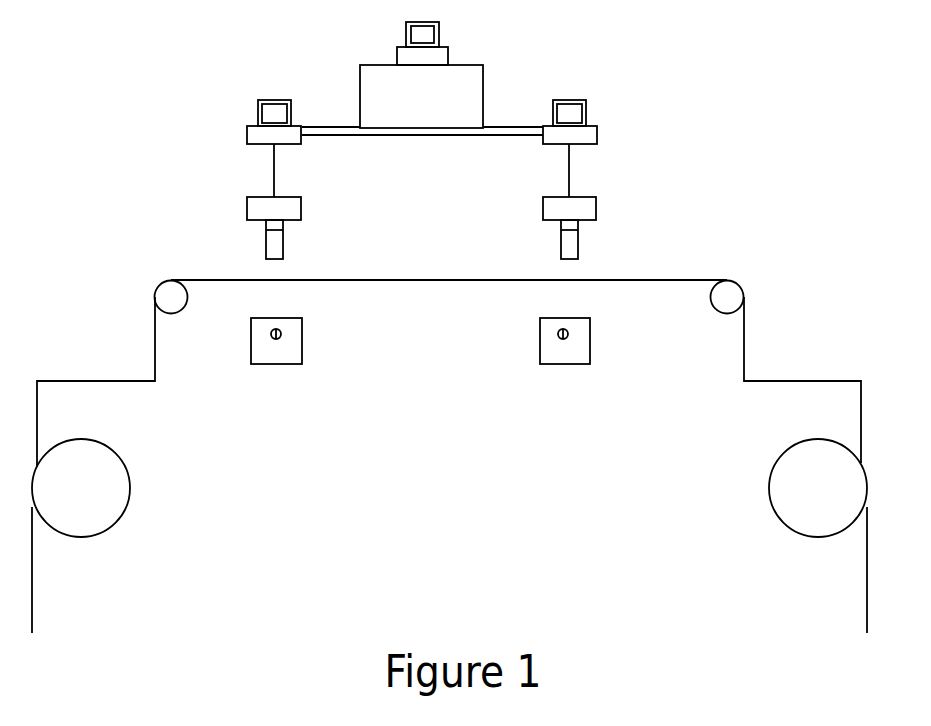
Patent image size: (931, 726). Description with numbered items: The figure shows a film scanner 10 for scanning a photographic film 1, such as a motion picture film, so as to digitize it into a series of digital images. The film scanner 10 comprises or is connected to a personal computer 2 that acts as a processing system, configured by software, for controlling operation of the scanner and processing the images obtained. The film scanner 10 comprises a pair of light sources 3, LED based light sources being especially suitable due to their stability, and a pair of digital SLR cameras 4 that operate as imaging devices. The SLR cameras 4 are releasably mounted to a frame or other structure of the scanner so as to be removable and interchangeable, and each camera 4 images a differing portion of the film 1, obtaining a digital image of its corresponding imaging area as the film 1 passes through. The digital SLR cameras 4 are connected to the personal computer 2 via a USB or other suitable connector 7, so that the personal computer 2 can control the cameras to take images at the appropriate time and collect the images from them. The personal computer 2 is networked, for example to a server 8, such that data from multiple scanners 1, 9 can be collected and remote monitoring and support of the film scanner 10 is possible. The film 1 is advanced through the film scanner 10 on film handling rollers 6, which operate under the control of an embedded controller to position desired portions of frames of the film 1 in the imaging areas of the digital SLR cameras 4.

The photographic film 1 is at (465, 282).
The personal computer 2 is at (275, 100).
The light sources 3 is at (287, 351).
The digital SLR cameras 4 is at (265, 209).
The film handling rollers 6 is at (72, 502).
The connector 7 is at (274, 168).
The server 8 is at (436, 34).
The scanner 9 is at (396, 50).
The film scanner 10 is at (702, 102).